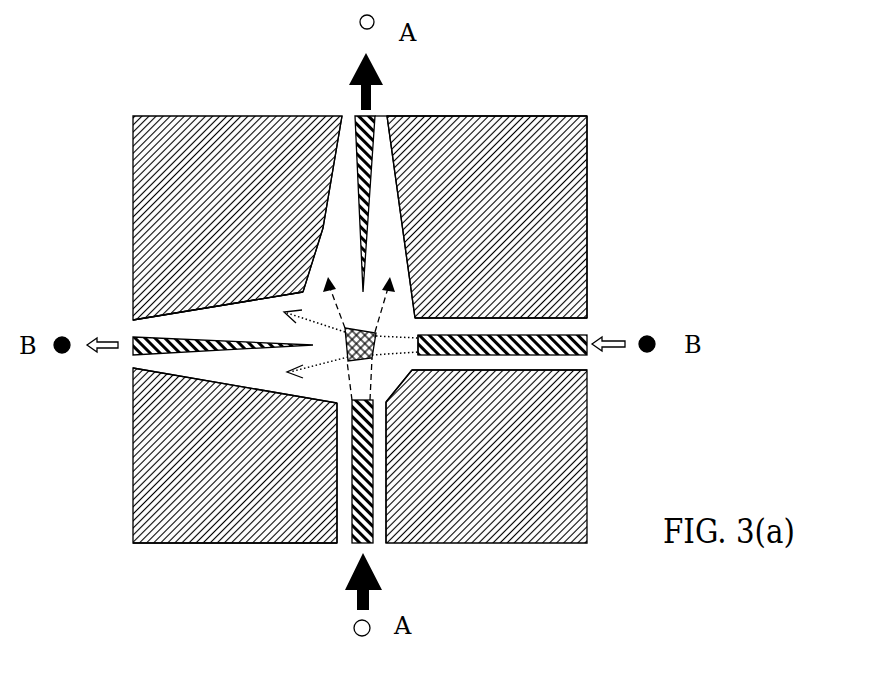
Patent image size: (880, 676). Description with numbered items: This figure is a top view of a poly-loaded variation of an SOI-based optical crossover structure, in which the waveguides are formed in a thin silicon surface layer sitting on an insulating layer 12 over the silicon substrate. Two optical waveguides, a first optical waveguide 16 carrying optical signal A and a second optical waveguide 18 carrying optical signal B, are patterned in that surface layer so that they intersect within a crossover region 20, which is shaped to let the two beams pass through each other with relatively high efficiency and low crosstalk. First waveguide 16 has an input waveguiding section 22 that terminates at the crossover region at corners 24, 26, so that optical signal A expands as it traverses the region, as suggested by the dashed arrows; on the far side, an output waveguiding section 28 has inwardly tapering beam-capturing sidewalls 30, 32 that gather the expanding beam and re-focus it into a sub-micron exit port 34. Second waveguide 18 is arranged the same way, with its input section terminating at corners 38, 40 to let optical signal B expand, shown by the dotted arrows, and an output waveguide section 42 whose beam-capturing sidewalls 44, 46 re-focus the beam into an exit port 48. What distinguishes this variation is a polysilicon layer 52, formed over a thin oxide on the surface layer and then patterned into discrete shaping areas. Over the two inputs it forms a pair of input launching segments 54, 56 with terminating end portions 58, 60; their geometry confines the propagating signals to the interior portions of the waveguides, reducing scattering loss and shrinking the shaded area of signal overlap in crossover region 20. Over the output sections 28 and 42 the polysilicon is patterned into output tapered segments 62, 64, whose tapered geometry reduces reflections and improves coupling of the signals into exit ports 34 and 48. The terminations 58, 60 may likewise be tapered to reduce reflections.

The insulating layer 12 is at (588, 131).
The first optical waveguide 16 is at (383, 480).
The second optical waveguide 18 is at (557, 364).
The crossover region 20 is at (495, 121).
The input waveguiding section 22 is at (345, 542).
The corner 24 is at (320, 397).
The corner 26 is at (387, 402).
The output waveguiding section 28 is at (322, 240).
The beam-capturing sidewall 30 is at (310, 248).
The beam-capturing sidewall 32 is at (410, 265).
The exit port 34 is at (347, 128).
The corner 38 is at (368, 393).
The corner 40 is at (523, 333).
The output waveguide section 42 is at (135, 398).
The beam-capturing sidewall 44 is at (232, 388).
The beam-capturing sidewall 46 is at (228, 310).
The exit port 48 is at (167, 322).
The polysilicon layer 52 is at (572, 335).
The input launching segment 54 is at (287, 541).
The input launching segment 56 is at (581, 262).
The terminating end portion 58 is at (403, 383).
The terminating end portion 60 is at (437, 294).
The output tapered segment 62 is at (383, 117).
The output tapered segment 64 is at (133, 348).